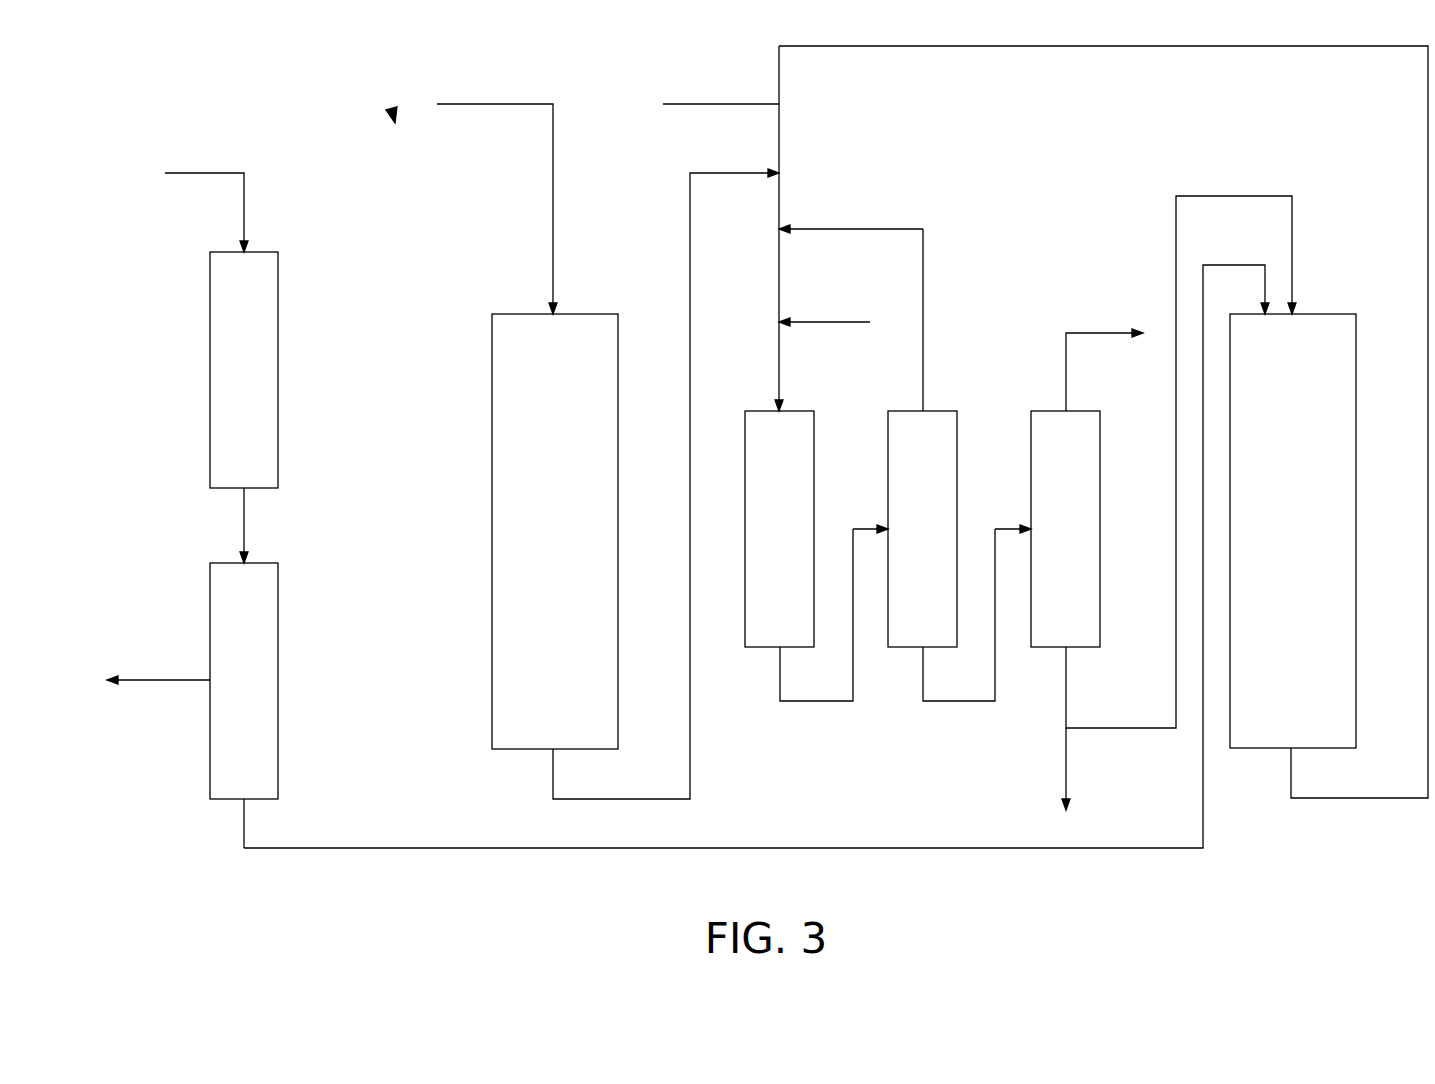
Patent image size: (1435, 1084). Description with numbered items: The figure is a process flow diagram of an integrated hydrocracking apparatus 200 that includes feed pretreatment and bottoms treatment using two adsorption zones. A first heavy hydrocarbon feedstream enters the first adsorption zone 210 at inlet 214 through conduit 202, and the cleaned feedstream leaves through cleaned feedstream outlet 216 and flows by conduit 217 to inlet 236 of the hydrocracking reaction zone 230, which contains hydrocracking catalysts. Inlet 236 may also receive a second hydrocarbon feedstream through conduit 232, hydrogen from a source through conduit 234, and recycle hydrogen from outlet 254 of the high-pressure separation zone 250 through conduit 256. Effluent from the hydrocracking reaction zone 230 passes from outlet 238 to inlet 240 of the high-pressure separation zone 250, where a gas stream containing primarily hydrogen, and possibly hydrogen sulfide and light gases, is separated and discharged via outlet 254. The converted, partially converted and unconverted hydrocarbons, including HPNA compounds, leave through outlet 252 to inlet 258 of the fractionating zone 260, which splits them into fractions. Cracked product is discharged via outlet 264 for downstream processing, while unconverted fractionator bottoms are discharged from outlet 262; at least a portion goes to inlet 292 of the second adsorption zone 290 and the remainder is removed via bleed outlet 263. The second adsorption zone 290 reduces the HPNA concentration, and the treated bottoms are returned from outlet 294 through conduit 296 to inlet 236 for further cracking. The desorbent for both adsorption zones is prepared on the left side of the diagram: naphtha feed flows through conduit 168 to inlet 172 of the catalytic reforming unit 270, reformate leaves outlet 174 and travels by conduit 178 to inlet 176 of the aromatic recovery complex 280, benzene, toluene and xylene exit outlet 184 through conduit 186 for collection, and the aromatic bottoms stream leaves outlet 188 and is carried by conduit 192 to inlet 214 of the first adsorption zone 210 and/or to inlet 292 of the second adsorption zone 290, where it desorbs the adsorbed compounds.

The integrated hydrocracking apparatus 200 is at (392, 120).
The conduit 168 is at (212, 173).
The inlet 172 is at (244, 250).
The outlet 174 is at (244, 492).
The inlet 176 is at (246, 562).
The conduit 178 is at (240, 530).
The outlet 184 is at (212, 680).
The conduit 186 is at (160, 680).
The outlet 188 is at (244, 800).
The conduit 192 is at (298, 848).
The conduit 202 is at (498, 104).
The first adsorption zone 210 is at (555, 531).
The inlet 214 is at (557, 314).
The cleaned feedstream outlet 216 is at (553, 752).
The conduit 217 is at (720, 173).
The hydrocracking reaction zone 230 is at (779, 529).
The conduit 232 is at (720, 104).
The conduit 234 is at (845, 322).
The inlet 236 is at (781, 372).
The outlet 238 is at (780, 690).
The inlet 240 is at (858, 529).
The high-pressure separation zone 250 is at (922, 529).
The outlet 252 is at (923, 690).
The outlet 254 is at (925, 322).
The conduit 256 is at (850, 229).
The inlet 258 is at (1003, 529).
The fractionating zone 260 is at (1065, 529).
The outlet 262 is at (1068, 650).
The bleed outlet 263 is at (1068, 775).
The outlet 264 is at (1070, 333).
The catalytic reforming unit 270 is at (244, 370).
The aromatic recovery complex 280 is at (244, 681).
The second adsorption zone 290 is at (1293, 531).
The inlet 292 is at (1293, 312).
The outlet 294 is at (1289, 752).
The conduit 296 is at (1100, 46).